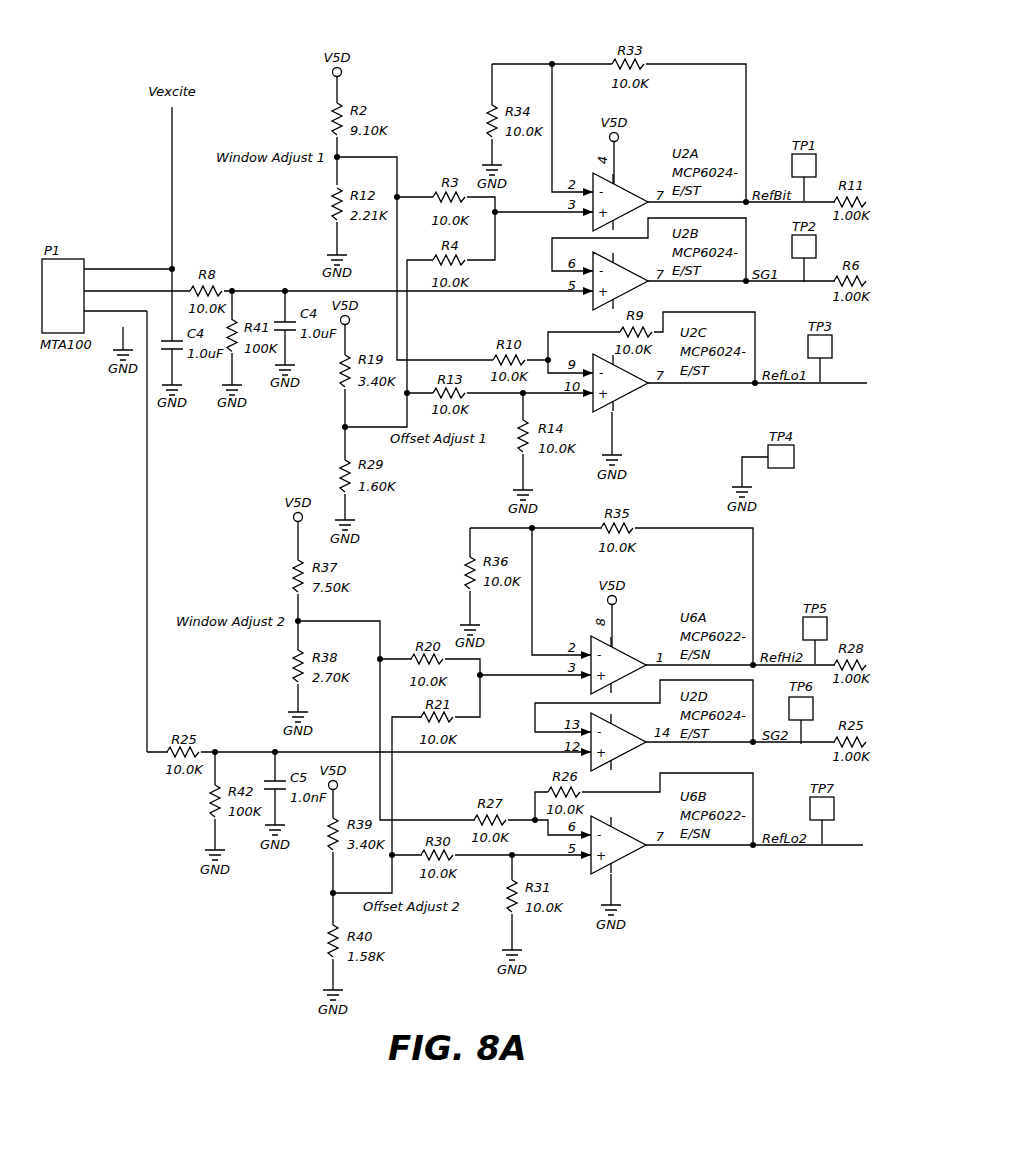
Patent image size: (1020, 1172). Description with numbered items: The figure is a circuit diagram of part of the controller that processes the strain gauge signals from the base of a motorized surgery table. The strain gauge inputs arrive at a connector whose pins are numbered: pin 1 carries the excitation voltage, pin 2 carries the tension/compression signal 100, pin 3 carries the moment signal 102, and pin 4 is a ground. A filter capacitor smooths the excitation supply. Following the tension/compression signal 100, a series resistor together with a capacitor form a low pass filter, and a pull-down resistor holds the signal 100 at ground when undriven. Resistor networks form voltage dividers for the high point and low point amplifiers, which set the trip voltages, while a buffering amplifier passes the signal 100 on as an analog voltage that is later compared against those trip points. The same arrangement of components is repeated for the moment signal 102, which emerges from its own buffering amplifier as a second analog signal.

The tension/compression signal 100 is at (182, 291).
The moment signal 102 is at (147, 495).
The excitation voltage input 1 is at (122, 270).
The tension/compression signal input 2 is at (131, 291).
The moment signal input 3 is at (109, 311).
The ground input 4 is at (102, 339).